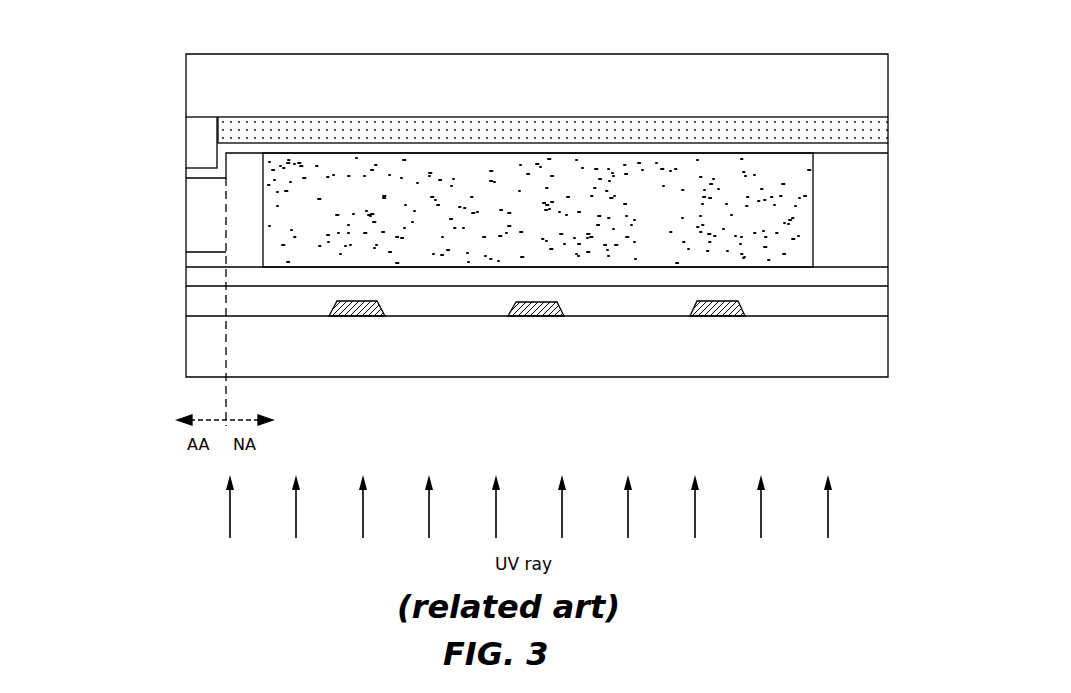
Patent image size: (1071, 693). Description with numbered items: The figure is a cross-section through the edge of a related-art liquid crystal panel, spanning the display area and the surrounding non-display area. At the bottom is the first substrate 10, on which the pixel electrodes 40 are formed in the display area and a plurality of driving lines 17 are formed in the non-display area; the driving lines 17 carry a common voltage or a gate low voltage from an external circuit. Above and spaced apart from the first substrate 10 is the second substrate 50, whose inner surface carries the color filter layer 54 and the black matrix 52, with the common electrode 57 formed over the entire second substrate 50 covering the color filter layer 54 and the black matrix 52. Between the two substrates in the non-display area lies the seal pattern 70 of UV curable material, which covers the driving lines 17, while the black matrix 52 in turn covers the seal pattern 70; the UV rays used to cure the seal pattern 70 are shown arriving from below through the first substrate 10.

The first substrate 10 is at (880, 356).
The driving lines 17 is at (340, 316).
The pixel electrodes 40 is at (195, 260).
The second substrate 50 is at (880, 97).
The black matrix 52 is at (680, 125).
The color filter layer 54 is at (195, 129).
The common electrode 57 is at (552, 149).
The seal pattern 70 is at (808, 219).